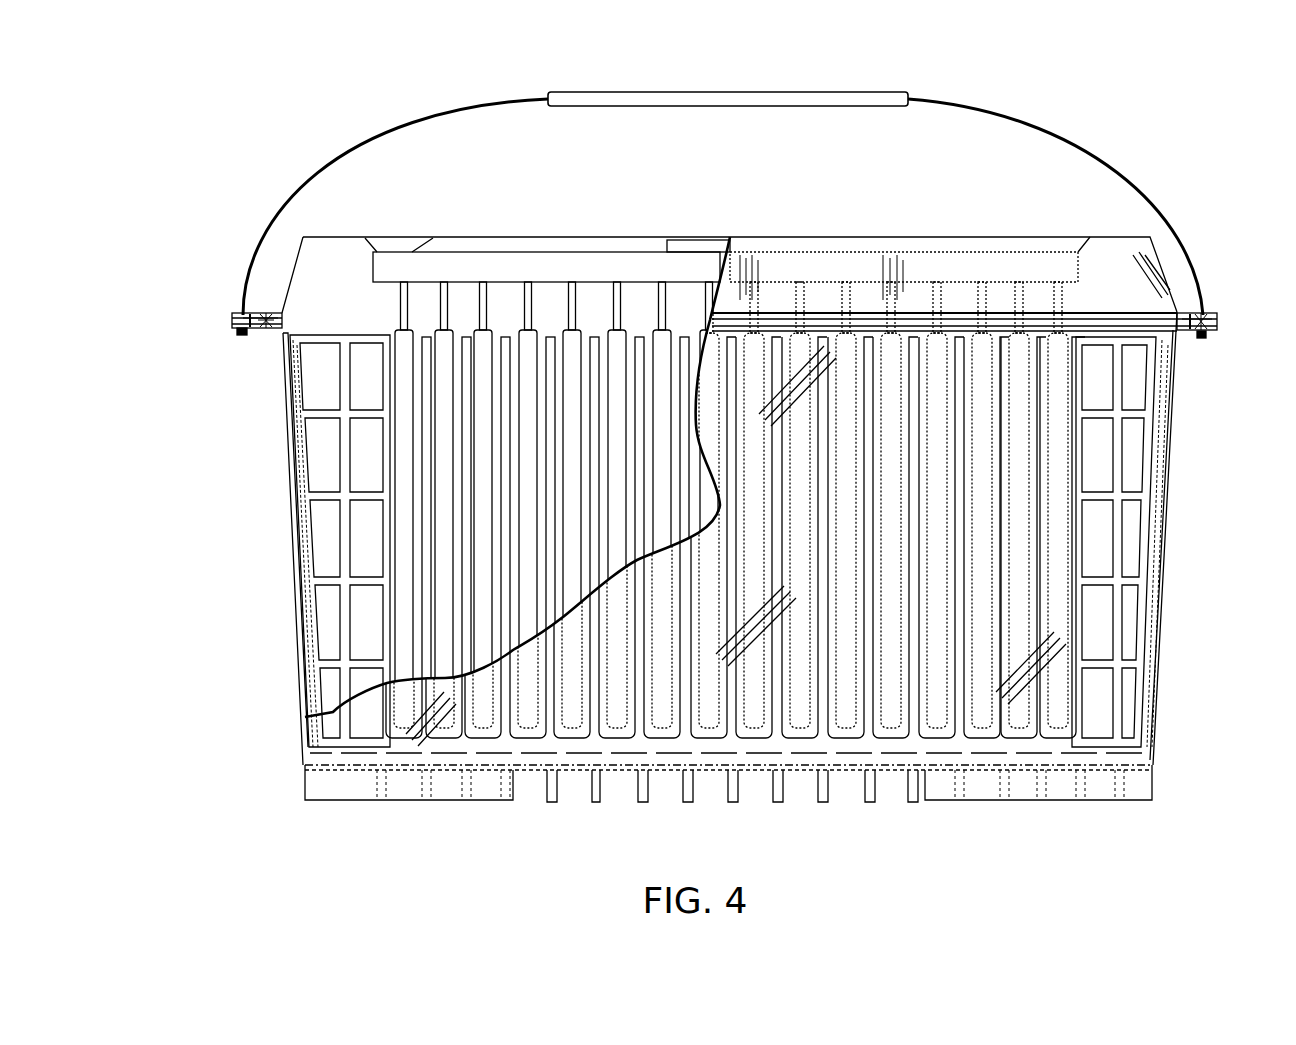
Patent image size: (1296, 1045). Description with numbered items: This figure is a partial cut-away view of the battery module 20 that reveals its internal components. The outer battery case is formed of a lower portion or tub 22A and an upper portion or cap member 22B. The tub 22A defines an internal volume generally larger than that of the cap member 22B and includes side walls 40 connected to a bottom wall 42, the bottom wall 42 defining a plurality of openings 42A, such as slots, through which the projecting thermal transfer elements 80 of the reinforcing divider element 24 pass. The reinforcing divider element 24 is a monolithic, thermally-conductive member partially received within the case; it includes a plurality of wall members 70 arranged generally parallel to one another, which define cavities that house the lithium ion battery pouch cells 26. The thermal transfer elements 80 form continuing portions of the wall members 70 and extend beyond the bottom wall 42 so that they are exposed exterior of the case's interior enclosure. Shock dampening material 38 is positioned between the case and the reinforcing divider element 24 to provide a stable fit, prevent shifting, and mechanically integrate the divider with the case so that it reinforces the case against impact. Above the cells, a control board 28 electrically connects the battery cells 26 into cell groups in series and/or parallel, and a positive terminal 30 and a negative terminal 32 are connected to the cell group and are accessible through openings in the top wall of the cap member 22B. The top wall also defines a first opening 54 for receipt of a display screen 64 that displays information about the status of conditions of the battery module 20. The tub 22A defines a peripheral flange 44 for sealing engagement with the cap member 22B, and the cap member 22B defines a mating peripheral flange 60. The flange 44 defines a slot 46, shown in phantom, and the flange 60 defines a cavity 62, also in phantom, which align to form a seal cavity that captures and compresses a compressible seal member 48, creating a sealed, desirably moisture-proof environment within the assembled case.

The battery module 20 is at (347, 54).
The tub 22A is at (1166, 466).
The cap member 22B is at (1160, 264).
The reinforcing divider element 24 is at (302, 335).
The lithium ion battery pouch cells 26 is at (484, 330).
The control board 28 is at (374, 267).
The positive terminal 30 is at (411, 249).
The negative terminal 32 is at (1060, 247).
The shock dampening material 38 is at (284, 350).
The side walls 40 is at (1166, 532).
The bottom wall 42 is at (1114, 773).
The openings 42A is at (636, 773).
The peripheral flange 44 is at (1213, 313).
The slot 46 is at (272, 312).
The compressible seal member 48 is at (258, 308).
The first opening 54 is at (748, 232).
The peripheral flange 60 is at (1205, 325).
The cavity 62 is at (268, 332).
The display screen 64 is at (697, 243).
The wall members 70 is at (500, 340).
The thermal transfer elements 80 is at (593, 803).